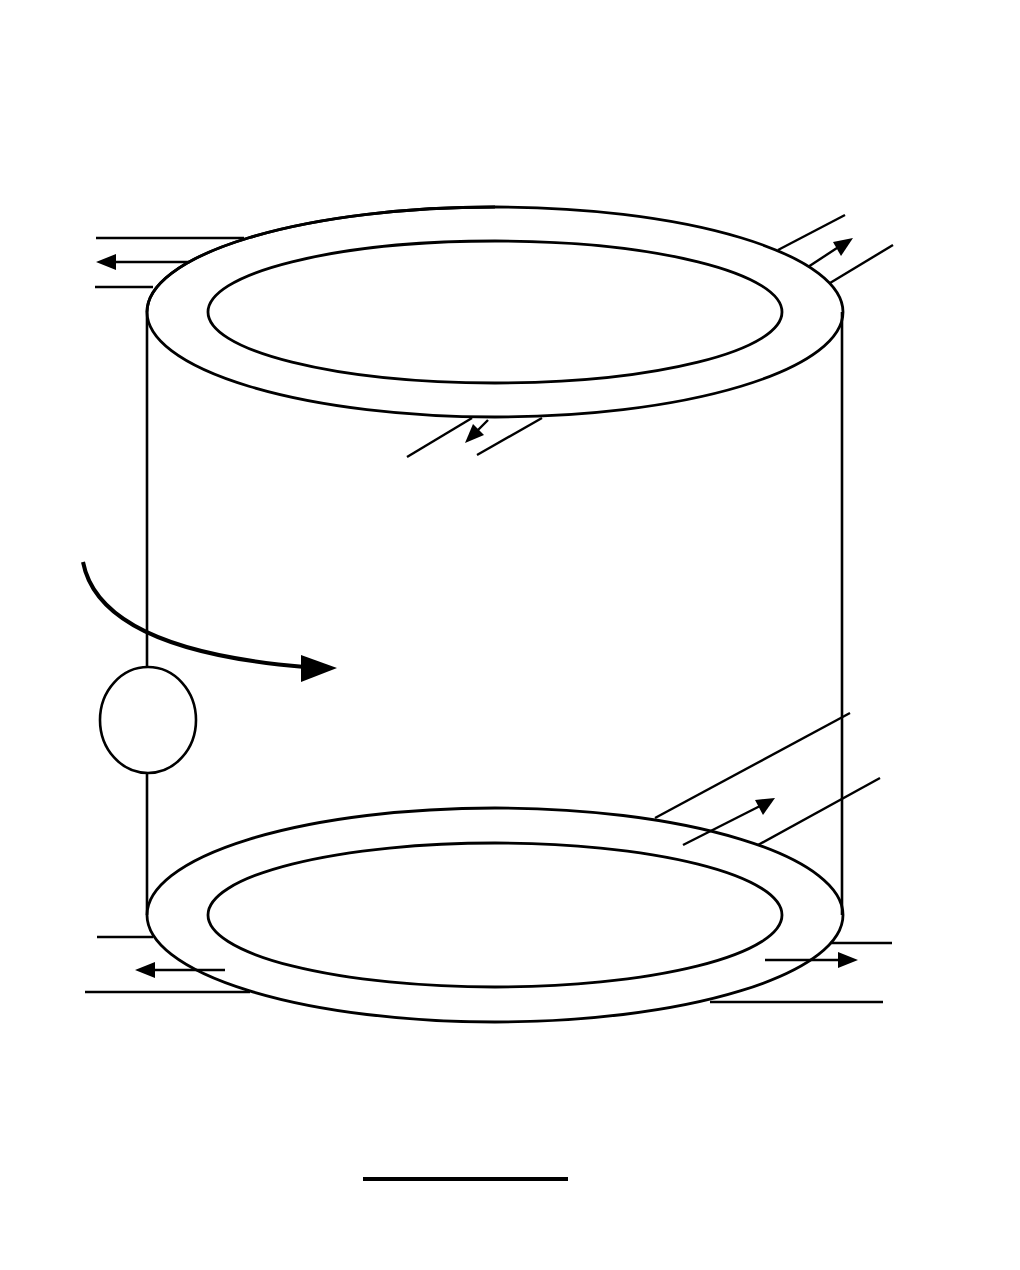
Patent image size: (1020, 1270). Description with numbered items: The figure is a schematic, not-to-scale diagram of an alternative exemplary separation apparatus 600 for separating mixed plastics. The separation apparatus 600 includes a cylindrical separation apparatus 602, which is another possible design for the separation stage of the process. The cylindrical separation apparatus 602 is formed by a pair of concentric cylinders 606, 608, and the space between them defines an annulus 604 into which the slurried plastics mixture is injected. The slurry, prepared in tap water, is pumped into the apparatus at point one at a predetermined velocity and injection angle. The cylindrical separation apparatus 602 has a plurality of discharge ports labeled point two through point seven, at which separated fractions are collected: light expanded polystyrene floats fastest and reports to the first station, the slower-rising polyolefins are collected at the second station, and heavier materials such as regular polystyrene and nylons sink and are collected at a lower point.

The separation apparatus 600 is at (581, 61).
The cylindrical separation apparatus 602 is at (473, 631).
The annulus 604 is at (555, 231).
The concentric cylinder 606 is at (438, 241).
The concentric cylinder 608 is at (363, 211).